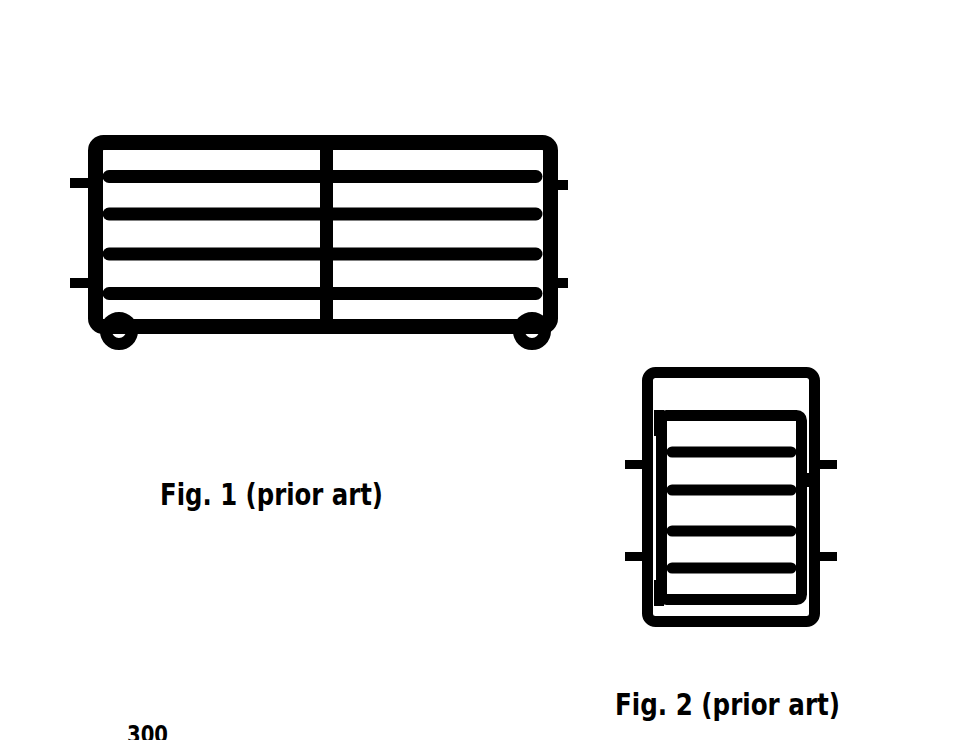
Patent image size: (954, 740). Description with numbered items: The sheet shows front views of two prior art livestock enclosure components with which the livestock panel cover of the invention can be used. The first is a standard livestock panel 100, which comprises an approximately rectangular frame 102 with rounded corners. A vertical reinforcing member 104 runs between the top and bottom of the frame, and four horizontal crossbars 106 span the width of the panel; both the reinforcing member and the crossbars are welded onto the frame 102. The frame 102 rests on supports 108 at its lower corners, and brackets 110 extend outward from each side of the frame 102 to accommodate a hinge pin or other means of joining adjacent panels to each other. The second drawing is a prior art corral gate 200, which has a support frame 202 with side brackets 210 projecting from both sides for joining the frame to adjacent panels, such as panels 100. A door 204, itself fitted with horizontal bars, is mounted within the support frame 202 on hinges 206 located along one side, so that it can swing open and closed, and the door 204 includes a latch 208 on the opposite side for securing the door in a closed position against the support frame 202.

In FIG. 1, the panel 100 is at (202, 95).
In FIG. 1, the frame 102 is at (255, 137).
In FIG. 1, the vertical reinforcing member 104 is at (333, 160).
In FIG. 1, the horizontal crossbars 106 is at (505, 287).
In FIG. 1, the supports 108 is at (512, 342).
In FIG. 1, the brackets 110 is at (73, 188).
In FIG. 2, the gate 200 is at (598, 517).
In FIG. 2, the support frame 202 is at (675, 367).
In FIG. 2, the door 204 is at (798, 410).
In FIG. 2, the hinges 206 is at (660, 428).
In FIG. 2, the latch 208 is at (815, 480).
In FIG. 2, the side brackets 210 is at (625, 462).